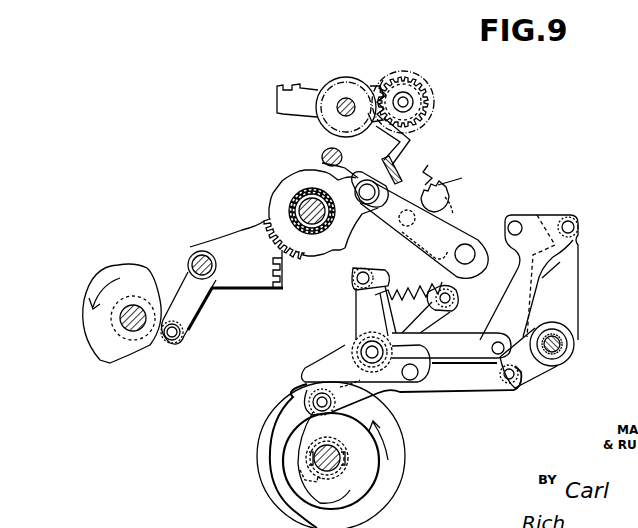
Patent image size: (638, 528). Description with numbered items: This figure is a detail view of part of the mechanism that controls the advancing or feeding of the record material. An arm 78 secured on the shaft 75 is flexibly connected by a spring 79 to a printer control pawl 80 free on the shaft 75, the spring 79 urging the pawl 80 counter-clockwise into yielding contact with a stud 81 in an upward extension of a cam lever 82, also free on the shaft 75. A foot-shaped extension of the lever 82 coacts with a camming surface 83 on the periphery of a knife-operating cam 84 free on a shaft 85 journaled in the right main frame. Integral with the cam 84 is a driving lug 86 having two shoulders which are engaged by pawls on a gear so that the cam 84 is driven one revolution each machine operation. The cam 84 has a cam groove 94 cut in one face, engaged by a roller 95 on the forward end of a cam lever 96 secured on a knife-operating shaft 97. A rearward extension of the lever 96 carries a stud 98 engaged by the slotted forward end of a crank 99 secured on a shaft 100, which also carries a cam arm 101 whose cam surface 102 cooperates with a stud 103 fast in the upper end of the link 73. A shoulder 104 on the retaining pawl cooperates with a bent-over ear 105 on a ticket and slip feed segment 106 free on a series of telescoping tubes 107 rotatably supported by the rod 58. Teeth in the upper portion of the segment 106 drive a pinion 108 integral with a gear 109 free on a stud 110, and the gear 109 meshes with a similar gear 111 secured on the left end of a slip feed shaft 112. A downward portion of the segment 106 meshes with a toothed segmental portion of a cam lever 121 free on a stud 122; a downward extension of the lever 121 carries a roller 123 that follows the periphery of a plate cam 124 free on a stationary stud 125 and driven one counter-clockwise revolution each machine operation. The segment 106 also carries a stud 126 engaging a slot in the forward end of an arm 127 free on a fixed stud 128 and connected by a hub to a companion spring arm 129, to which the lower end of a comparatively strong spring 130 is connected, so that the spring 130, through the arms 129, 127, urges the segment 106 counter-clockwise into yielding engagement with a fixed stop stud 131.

The rod 58 is at (326, 228).
The link 73 is at (542, 278).
The shaft 75 is at (362, 345).
The arm 78 is at (358, 284).
The spring 79 is at (400, 292).
The printer control pawl 80 is at (472, 270).
The stud 81 is at (452, 300).
The cam lever 82 is at (322, 366).
The camming surface 83 is at (278, 405).
The knife-operating cam 84 is at (266, 452).
The shaft 85 is at (313, 470).
The driving lug 86 is at (305, 488).
The cam groove 94 is at (385, 490).
The roller 95 is at (317, 412).
The cam lever 96 is at (480, 392).
The knife-operating shaft 97 is at (428, 345).
The stud 98 is at (520, 392).
The crank 99 is at (558, 378).
The shaft 100 is at (562, 343).
The cam arm 101 is at (570, 306).
The cam surface 102 is at (540, 235).
The stud 103 is at (584, 214).
The shoulder 104 is at (458, 180).
The bent-over ear 105 is at (410, 163).
The ticket and slip feed segment 106 is at (330, 156).
The telescoping tubes 107 is at (290, 206).
The pinion 108 is at (425, 112).
The gear 109 is at (383, 84).
The stud 110 is at (405, 100).
The gear 111 is at (375, 93).
The slip feed shaft 112 is at (340, 101).
The cam lever 121 is at (240, 232).
The stud 122 is at (198, 258).
The roller 123 is at (180, 340).
The plate cam 124 is at (120, 352).
The stationary stud 125 is at (130, 320).
The stud 126 is at (380, 188).
The arm 127 is at (362, 212).
The fixed stud 128 is at (463, 250).
The spring arm 129 is at (450, 222).
The spring 130 is at (443, 174).
The fixed stop stud 131 is at (322, 163).